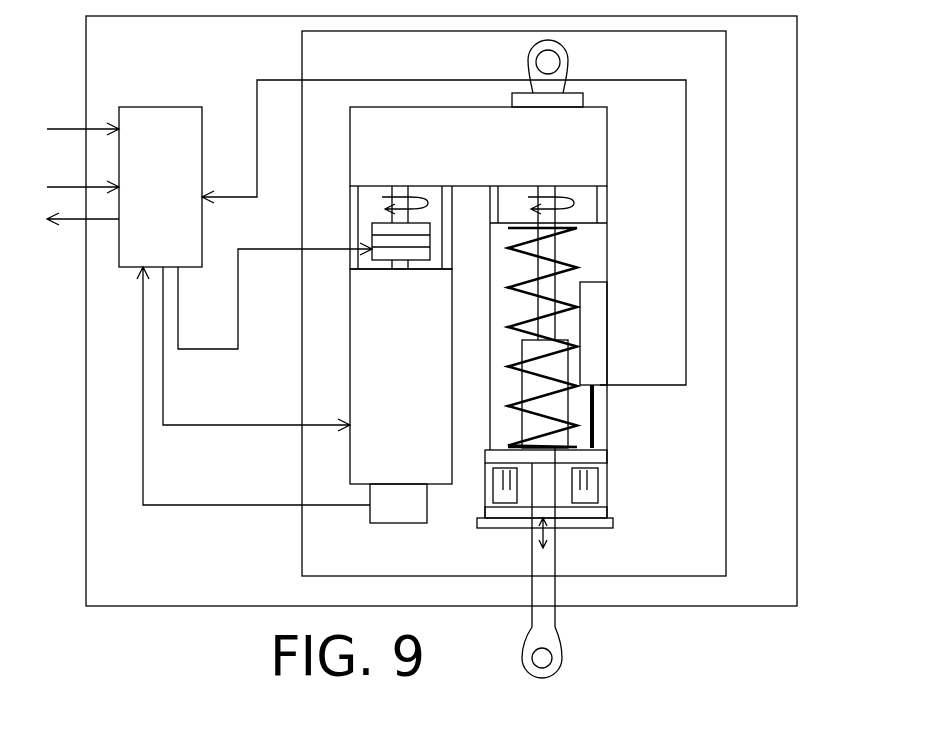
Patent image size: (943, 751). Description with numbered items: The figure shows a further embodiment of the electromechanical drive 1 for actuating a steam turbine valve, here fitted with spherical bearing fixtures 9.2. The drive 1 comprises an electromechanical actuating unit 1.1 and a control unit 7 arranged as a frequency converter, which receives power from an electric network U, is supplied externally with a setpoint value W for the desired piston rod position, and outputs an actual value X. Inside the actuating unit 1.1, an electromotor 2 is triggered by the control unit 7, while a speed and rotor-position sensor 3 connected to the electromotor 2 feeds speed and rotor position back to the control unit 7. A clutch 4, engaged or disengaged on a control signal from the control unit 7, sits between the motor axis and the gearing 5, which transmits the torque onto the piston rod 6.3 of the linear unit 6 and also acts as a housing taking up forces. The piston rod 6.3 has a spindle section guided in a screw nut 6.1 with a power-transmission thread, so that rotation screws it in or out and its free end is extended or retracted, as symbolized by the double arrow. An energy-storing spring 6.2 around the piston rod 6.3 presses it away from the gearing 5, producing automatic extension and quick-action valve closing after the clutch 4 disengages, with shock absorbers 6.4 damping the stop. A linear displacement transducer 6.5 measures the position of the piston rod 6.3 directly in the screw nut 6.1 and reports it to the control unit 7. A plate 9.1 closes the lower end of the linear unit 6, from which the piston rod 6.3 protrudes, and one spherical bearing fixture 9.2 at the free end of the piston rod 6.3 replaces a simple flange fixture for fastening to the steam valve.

The electromechanical drive 1 is at (797, 110).
The electromechanical actuating unit 1.1 is at (727, 117).
The electromotor 2 is at (401, 376).
The speed and rotor-position sensor 3 is at (398, 503).
The clutch 4 is at (412, 243).
The gearing 5 is at (478, 146).
The linear unit 6 is at (602, 268).
The screw nut 6.1 is at (545, 374).
The energy-storing spring 6.2 is at (578, 226).
The piston rod 6.3 is at (547, 557).
The shock absorbers 6.4 is at (590, 490).
The linear displacement transducer 6.5 is at (593, 365).
The control unit 7 is at (111, 187).
The end plate 9.1 is at (605, 522).
The spherical bearing fixtures 9.2 is at (562, 48).